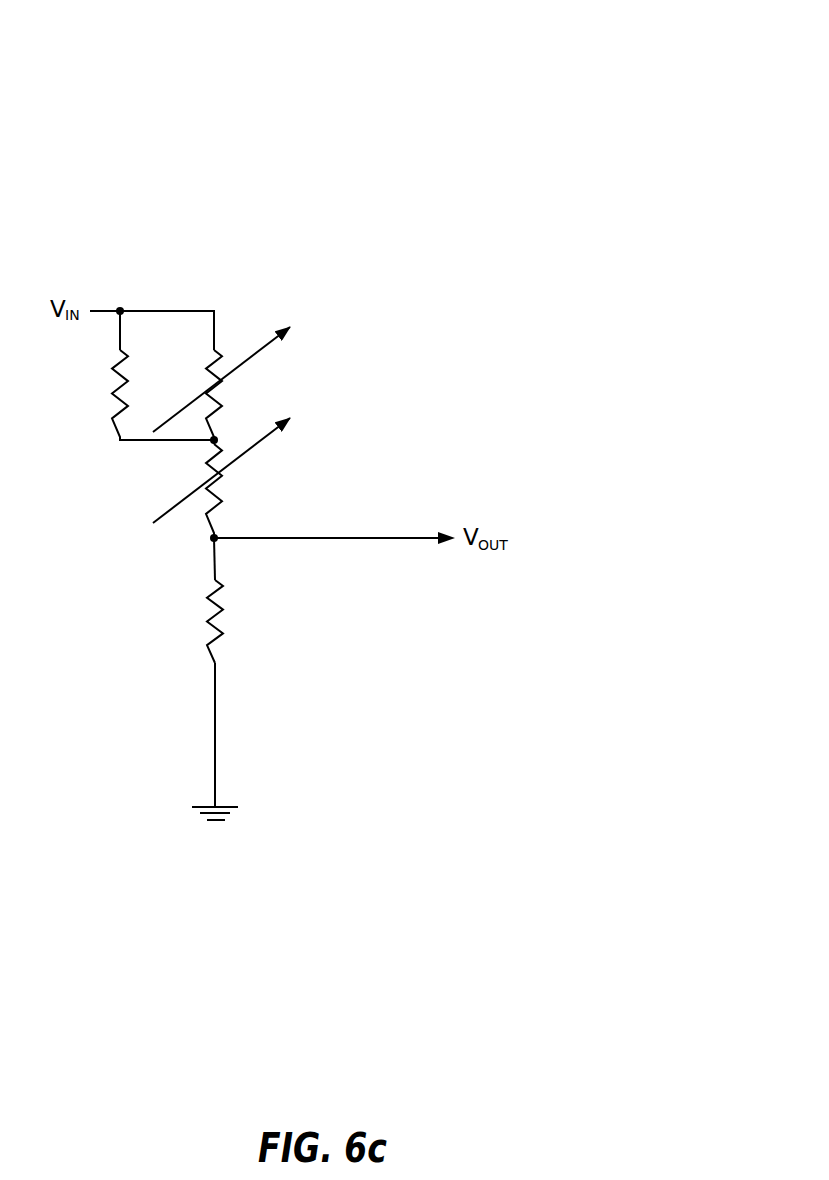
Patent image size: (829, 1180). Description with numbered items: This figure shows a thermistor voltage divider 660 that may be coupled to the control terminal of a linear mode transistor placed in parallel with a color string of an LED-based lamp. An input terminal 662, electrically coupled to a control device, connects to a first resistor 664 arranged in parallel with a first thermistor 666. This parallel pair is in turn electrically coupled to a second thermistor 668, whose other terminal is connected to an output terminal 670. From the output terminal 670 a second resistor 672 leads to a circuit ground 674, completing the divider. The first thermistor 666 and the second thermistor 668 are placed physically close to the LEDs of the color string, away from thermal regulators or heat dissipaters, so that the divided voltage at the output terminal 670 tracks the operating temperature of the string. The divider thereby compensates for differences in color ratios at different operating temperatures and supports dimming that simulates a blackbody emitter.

The thermistor voltage divider 660 is at (586, 55).
The input terminal 662 is at (98, 308).
The first resistor 664 is at (117, 378).
The first thermistor 666 is at (220, 350).
The second thermistor 668 is at (218, 480).
The output terminal 670 is at (412, 537).
The second resistor 672 is at (222, 645).
The circuit ground 674 is at (238, 807).